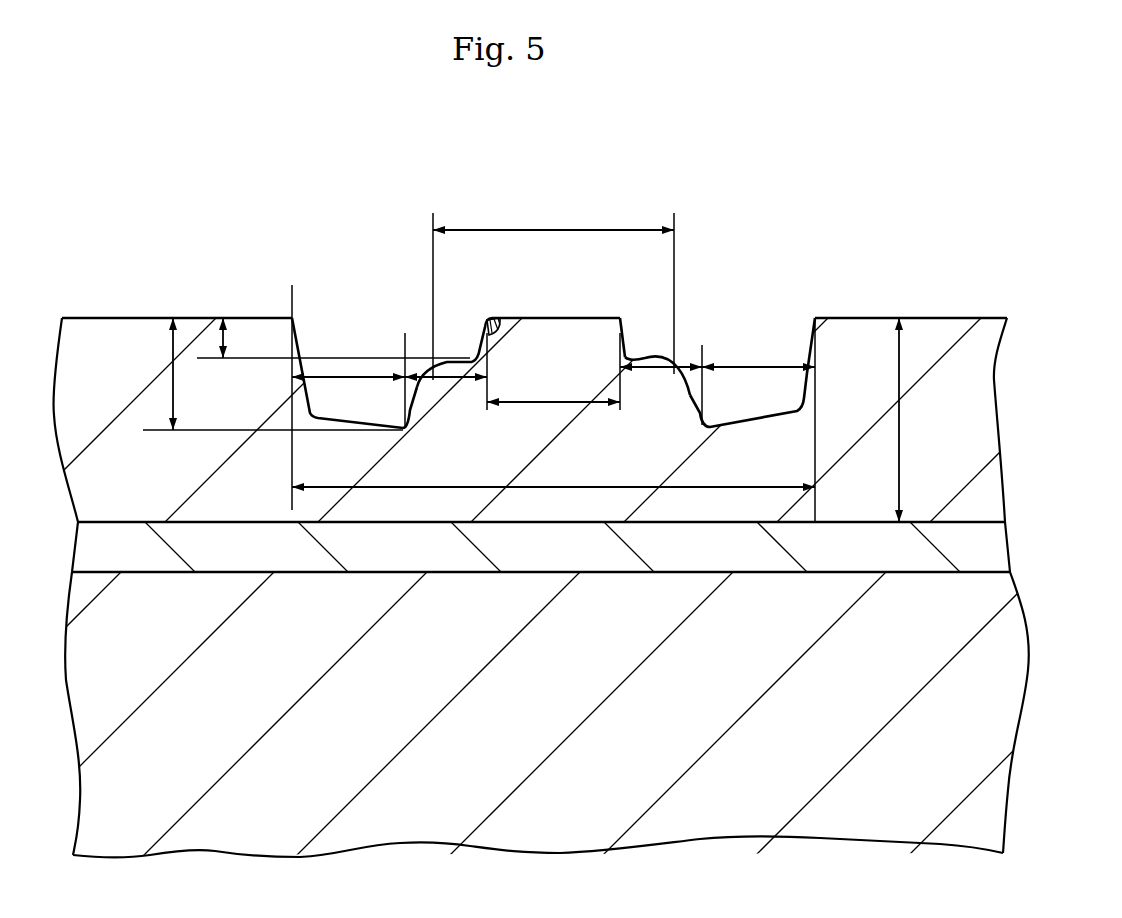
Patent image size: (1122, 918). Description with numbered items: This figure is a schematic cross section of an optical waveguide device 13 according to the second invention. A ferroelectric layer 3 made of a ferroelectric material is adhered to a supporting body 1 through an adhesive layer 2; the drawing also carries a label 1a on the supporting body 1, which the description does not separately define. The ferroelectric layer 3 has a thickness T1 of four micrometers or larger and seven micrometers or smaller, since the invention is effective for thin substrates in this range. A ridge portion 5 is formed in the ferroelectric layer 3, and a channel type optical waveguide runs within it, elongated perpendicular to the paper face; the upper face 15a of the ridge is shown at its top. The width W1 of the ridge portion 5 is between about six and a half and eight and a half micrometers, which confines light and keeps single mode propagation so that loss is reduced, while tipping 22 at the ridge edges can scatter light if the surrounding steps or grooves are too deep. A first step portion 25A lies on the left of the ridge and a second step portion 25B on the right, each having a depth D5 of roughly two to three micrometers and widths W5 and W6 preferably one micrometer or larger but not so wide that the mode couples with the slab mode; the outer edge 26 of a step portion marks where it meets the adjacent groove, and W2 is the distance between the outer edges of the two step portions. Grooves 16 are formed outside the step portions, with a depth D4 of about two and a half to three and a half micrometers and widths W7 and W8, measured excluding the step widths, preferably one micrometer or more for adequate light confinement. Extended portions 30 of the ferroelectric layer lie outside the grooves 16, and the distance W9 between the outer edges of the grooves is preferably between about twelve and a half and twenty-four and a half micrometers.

The supporting body 1 is at (1000, 668).
The main surface of substrate 1a is at (757, 569).
The adhesive layer 2 is at (996, 549).
The ferroelectric layer 3 is at (1016, 368).
The ridge portion 5 is at (599, 314).
The optical waveguide device 13 is at (984, 306).
The upper face of the ridge portion 15a is at (550, 318).
The groove 16 is at (782, 326).
The tipping 22 is at (493, 318).
The first step portion 25A is at (448, 360).
The second step portion 25B is at (676, 366).
The outer edge of step portion 26 is at (440, 364).
The extended portion 30 is at (100, 335).
The width of ridge portion W1 is at (552, 400).
The distance between outer edges of first and second step portions W2 is at (553, 288).
The width of first step portion W5 is at (437, 379).
The width of second step portion W6 is at (657, 369).
The width of groove W7 is at (352, 376).
The width of groove W8 is at (745, 365).
The distance between outer edges of the grooves W9 is at (557, 486).
The depth of groove D4 is at (168, 373).
The depth of step portion D5 is at (220, 340).
The thickness of ferroelectric layer T1 is at (901, 418).